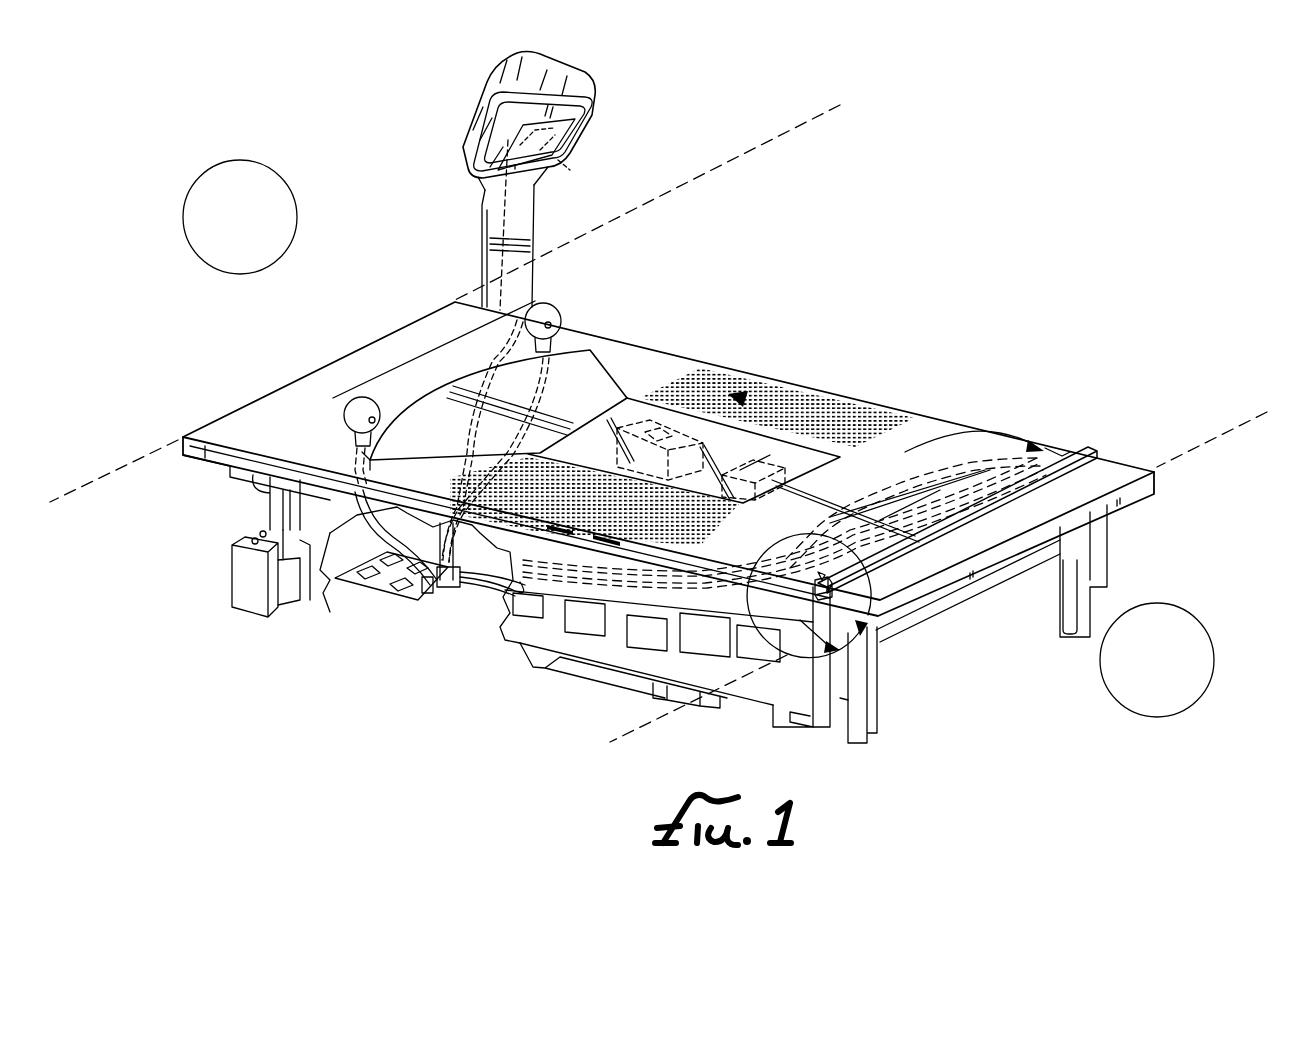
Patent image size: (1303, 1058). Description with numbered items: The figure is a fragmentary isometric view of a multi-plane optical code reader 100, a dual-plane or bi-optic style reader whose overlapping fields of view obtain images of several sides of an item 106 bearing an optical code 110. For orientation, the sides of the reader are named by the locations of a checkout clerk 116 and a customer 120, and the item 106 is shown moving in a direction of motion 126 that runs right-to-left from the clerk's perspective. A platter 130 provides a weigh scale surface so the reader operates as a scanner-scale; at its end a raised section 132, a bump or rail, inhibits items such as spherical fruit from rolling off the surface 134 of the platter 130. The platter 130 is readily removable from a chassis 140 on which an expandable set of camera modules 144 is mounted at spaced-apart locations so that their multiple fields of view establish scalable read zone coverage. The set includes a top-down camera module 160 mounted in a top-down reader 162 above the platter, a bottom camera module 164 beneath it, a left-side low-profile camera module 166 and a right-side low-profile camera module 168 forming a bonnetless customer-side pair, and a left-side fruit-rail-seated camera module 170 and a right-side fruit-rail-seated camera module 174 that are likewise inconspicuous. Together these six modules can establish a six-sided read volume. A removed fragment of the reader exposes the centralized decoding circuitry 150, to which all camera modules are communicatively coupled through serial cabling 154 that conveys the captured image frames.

The multi-plane optical code reader 100 is at (660, 84).
The item 106 is at (635, 405).
The optical code 110 is at (673, 420).
The checkout clerk 116 is at (1172, 603).
The customer 120 is at (258, 160).
The direction of motion 126 is at (786, 376).
The platter 130 is at (935, 417).
The raised section 132 is at (1085, 447).
The surface 134 is at (953, 503).
The chassis 140 is at (270, 510).
The expandable set of camera modules 144 is at (505, 327).
The centralized decoding circuitry 150 is at (380, 592).
The serial cabling 154 is at (463, 612).
The top-down camera module 160 is at (540, 174).
The top-down reader 162 is at (530, 53).
The bottom camera module 164 is at (762, 455).
The left-side low-profile camera module 166 is at (338, 400).
The right-side low-profile camera module 168 is at (553, 305).
The left-side fruit-rail-seated camera module 170 is at (813, 602).
The right-side fruit-rail-seated camera module 174 is at (1053, 452).